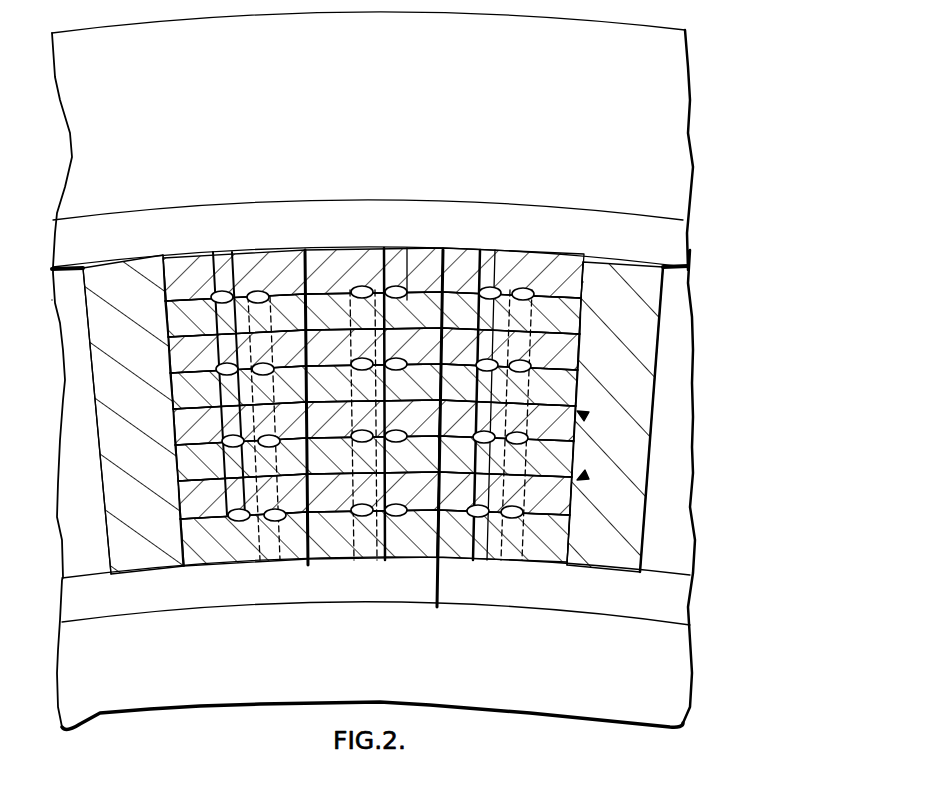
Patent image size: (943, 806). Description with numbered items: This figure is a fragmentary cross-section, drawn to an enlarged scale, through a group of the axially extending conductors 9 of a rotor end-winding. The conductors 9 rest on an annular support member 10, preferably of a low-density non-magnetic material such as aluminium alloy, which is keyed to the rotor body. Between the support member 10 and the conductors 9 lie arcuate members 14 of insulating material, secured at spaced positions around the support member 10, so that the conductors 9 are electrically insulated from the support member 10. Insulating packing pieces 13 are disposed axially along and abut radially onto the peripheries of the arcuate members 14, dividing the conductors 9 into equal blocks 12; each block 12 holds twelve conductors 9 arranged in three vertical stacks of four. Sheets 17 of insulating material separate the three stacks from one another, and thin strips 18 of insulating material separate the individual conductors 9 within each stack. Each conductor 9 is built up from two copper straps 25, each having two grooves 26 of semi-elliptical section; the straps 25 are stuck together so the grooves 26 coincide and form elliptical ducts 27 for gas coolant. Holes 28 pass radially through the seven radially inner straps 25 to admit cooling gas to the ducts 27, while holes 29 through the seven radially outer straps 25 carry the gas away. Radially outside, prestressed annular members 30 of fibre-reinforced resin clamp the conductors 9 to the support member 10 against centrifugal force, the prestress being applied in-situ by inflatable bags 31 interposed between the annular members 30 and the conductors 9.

The conductors 9 is at (320, 260).
The annular support member 10 is at (672, 672).
The blocks 12 is at (62, 473).
The packing pieces 13 is at (93, 365).
The arcuate members 14 is at (242, 590).
The sheets of insulating material 17 is at (310, 565).
The thin strips of insulating material 18 is at (582, 479).
The copper straps 25 is at (570, 348).
The grooves 26 is at (531, 287).
The ducts 27 is at (398, 287).
The holes 28 is at (465, 487).
The holes 29 is at (467, 492).
The annular members 30 is at (570, 30).
The inflatable bags 31 is at (606, 223).